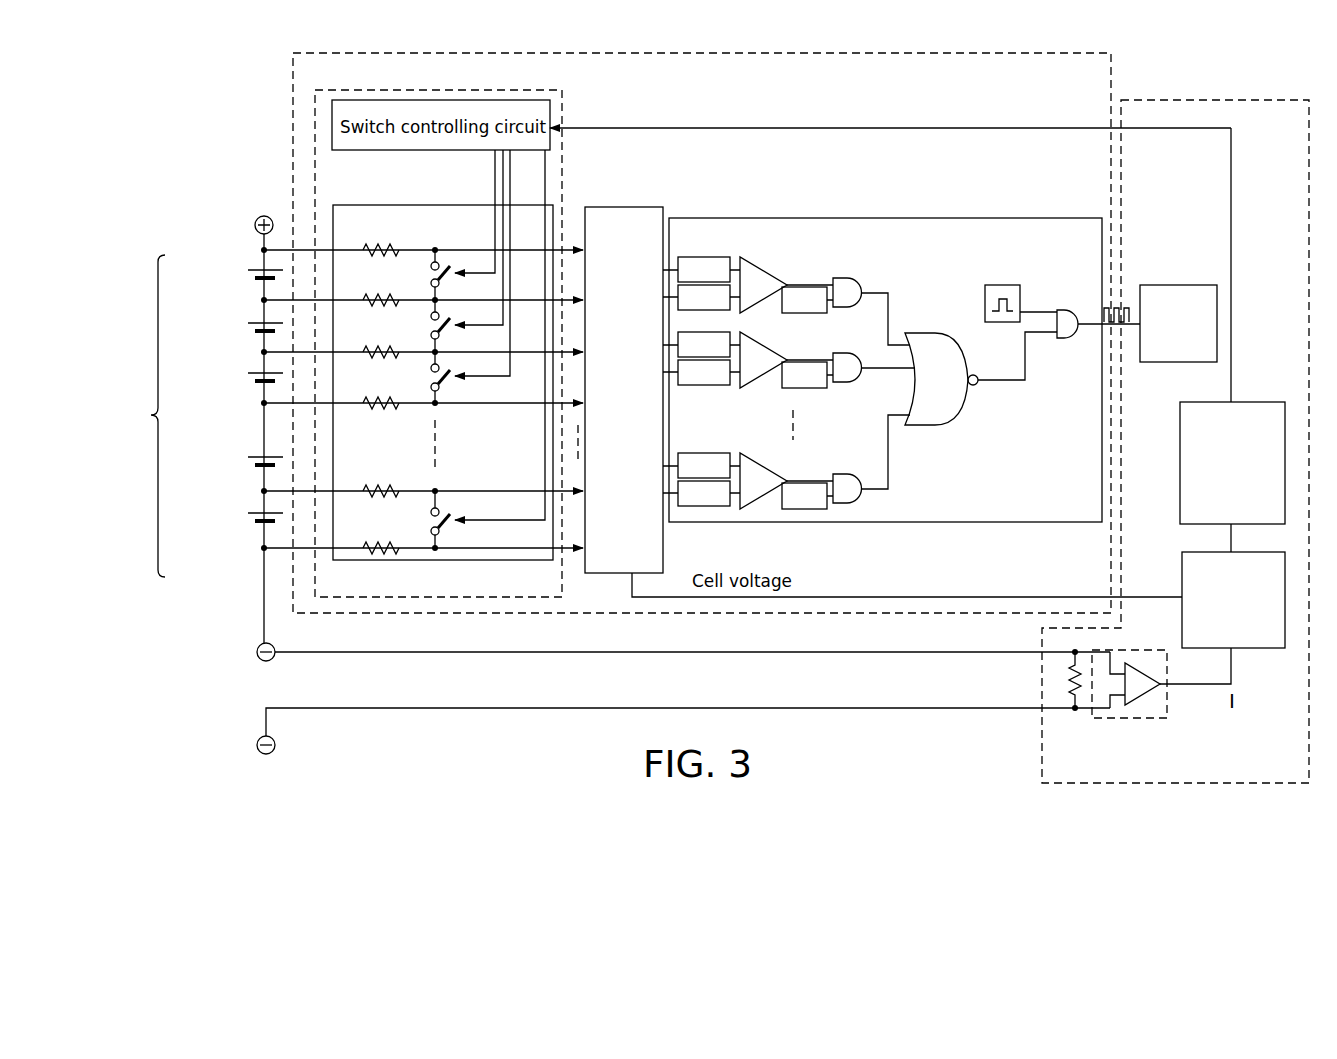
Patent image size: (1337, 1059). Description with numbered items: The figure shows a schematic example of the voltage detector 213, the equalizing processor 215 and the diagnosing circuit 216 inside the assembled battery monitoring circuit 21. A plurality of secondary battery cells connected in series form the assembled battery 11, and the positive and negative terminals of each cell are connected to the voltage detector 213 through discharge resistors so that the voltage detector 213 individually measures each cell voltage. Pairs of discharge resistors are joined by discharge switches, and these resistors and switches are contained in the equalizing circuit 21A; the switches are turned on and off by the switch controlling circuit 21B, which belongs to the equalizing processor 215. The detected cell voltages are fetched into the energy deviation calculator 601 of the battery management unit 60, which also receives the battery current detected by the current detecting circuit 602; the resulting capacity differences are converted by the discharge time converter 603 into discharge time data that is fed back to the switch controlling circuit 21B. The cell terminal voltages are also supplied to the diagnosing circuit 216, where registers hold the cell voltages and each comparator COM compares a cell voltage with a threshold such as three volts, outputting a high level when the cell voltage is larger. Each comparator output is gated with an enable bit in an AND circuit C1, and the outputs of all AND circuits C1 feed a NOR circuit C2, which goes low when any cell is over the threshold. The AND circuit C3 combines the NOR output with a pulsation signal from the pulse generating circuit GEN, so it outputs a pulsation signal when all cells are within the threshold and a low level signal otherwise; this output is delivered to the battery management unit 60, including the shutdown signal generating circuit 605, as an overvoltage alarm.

The assembled battery monitoring circuit 21 is at (405, 53).
The equalizing processor 215 is at (485, 90).
The equalizing circuit 21A is at (353, 205).
The switch controlling circuit 21B is at (425, 152).
The voltage detector 213 is at (630, 207).
The diagnosing circuit 216 is at (907, 216).
The battery management unit 60 is at (1190, 100).
The shutdown signal generating circuit 605 is at (1175, 285).
The discharge time converter 603 is at (1250, 400).
The energy deviation calculator 601 is at (1250, 552).
The current detecting circuit 602 is at (1105, 720).
The assembled battery 11 is at (205, 429).
The comparator COM is at (788, 262).
The AND circuit C1 is at (841, 278).
The NOR circuit C2 is at (942, 323).
The AND circuit C3 is at (1063, 310).
The pulse generating circuit GEN is at (1017, 273).